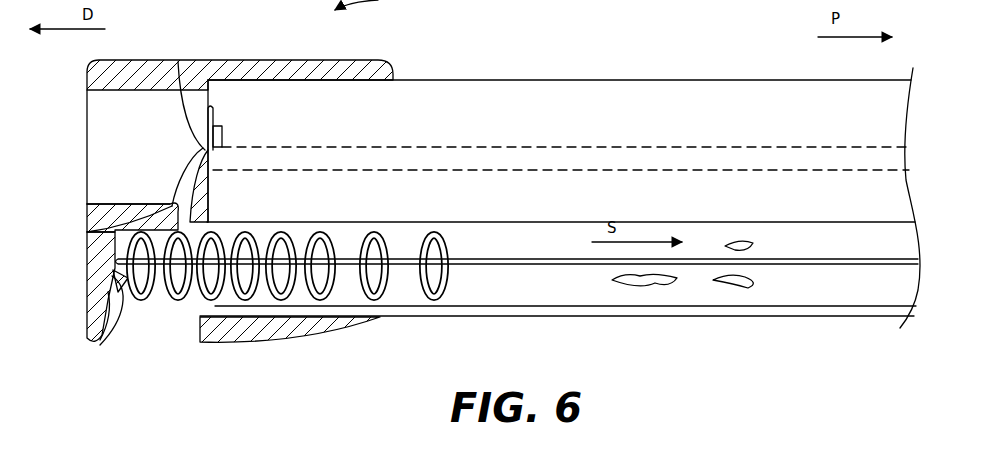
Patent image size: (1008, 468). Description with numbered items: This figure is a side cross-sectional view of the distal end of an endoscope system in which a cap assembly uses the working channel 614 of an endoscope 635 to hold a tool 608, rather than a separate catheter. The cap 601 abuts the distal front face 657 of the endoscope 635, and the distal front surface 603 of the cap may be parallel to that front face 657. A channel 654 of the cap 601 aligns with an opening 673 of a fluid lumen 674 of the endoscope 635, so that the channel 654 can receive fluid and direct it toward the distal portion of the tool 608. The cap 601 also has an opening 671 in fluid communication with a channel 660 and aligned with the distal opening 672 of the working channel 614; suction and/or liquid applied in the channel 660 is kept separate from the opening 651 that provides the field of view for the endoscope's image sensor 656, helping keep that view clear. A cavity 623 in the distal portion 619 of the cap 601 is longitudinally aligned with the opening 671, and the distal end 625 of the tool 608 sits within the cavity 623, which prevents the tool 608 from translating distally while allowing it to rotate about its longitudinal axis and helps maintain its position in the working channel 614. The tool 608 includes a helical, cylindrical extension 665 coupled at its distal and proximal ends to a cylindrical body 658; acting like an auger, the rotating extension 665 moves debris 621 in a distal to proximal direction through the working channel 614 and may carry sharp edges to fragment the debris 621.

The cap 601 is at (352, 70).
The distal front surface 603 is at (88, 85).
The tool 608 is at (838, 262).
The working channel 614 is at (572, 308).
The distal portion 619 is at (90, 260).
The debris 621 is at (655, 288).
The cavity 623 is at (100, 346).
The distal end 625 is at (112, 288).
The endoscope 635 is at (730, 80).
The opening 651 is at (110, 140).
The channel 654 is at (88, 232).
The image sensor 656 is at (222, 118).
The distal front face 657 is at (213, 116).
The cylindrical body 658 is at (523, 265).
The channel 660 is at (158, 344).
The extension 665 is at (400, 285).
The opening 671 is at (208, 310).
The distal opening 672 is at (238, 295).
The opening 673 is at (178, 62).
The fluid lumen 674 is at (555, 147).